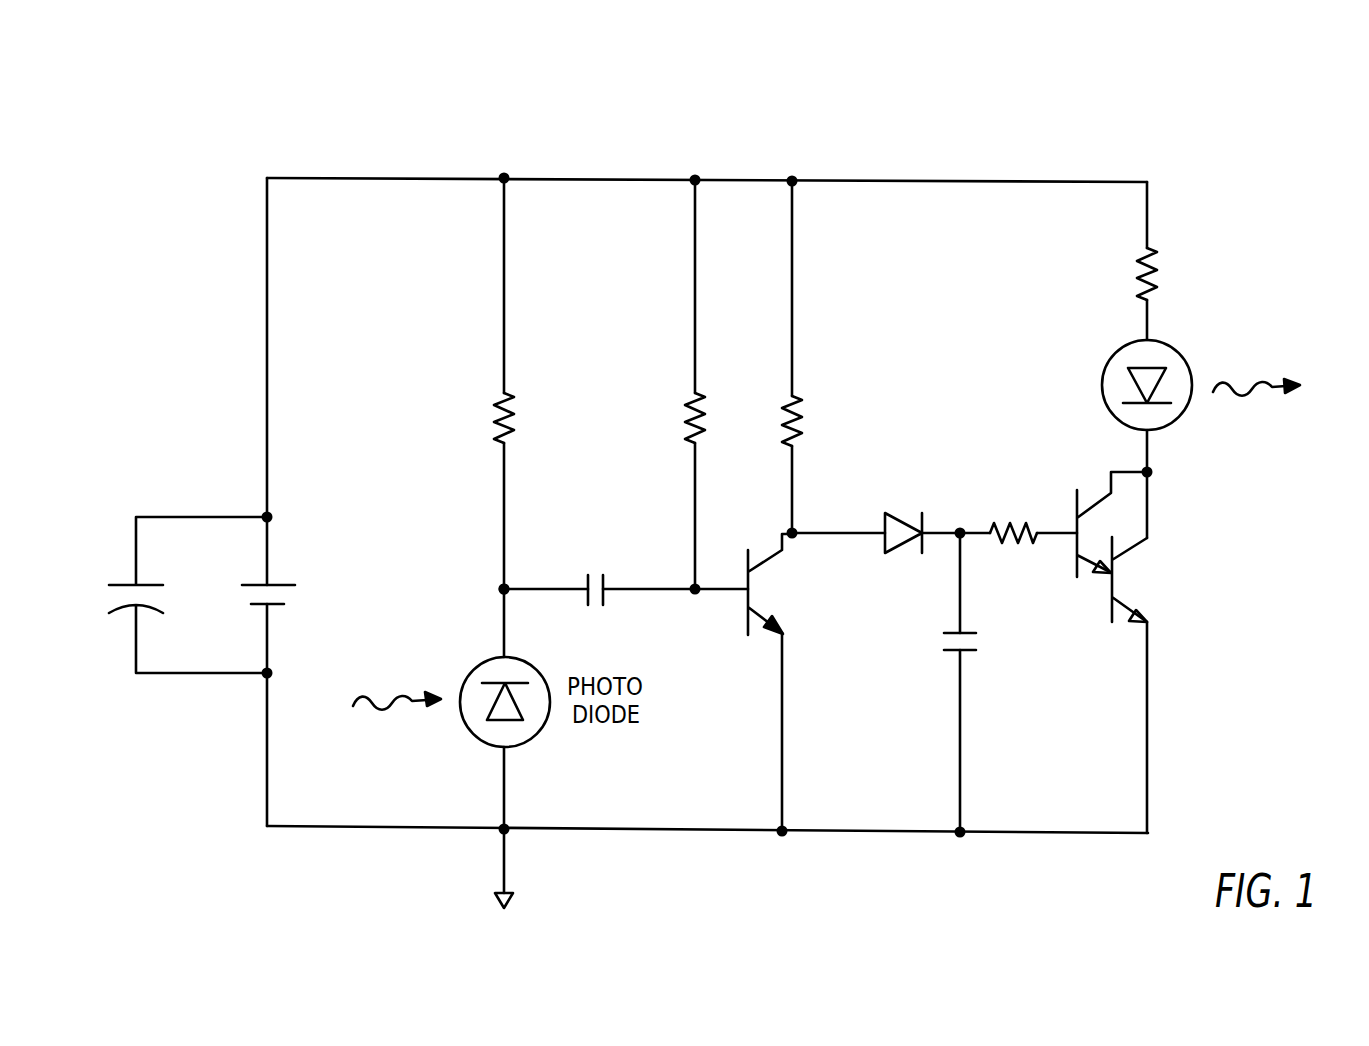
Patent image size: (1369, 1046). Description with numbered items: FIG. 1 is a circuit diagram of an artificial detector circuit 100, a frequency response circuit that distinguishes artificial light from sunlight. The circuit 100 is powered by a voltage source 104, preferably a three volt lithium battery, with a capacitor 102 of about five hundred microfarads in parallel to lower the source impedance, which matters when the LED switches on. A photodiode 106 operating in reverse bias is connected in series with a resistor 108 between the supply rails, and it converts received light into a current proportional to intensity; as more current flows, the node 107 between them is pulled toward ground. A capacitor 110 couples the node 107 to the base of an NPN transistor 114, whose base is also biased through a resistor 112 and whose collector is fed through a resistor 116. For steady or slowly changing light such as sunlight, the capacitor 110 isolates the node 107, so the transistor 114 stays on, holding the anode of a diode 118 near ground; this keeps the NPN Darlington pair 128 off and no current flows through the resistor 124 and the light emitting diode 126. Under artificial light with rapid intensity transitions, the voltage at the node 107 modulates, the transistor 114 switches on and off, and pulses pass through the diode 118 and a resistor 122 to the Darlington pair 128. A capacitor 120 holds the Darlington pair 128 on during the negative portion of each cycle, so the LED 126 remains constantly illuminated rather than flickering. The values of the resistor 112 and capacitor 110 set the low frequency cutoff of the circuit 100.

The artificial detector circuit 100 is at (1122, 107).
The capacitor 102 is at (110, 598).
The voltage source 104 is at (297, 593).
The photodiode 106 is at (465, 678).
The node 107 is at (490, 589).
The resistor 108 is at (492, 418).
The capacitor 110 is at (597, 572).
The resistor 112 is at (683, 418).
The NPN transistor 114 is at (748, 617).
The resistor 116 is at (797, 420).
The diode 118 is at (885, 520).
The capacitor 120 is at (942, 640).
The resistor 122 is at (1018, 523).
The resistor 124 is at (1155, 260).
The light emitting diode 126 is at (1105, 368).
The NPN Darlington pair 128 is at (1112, 605).